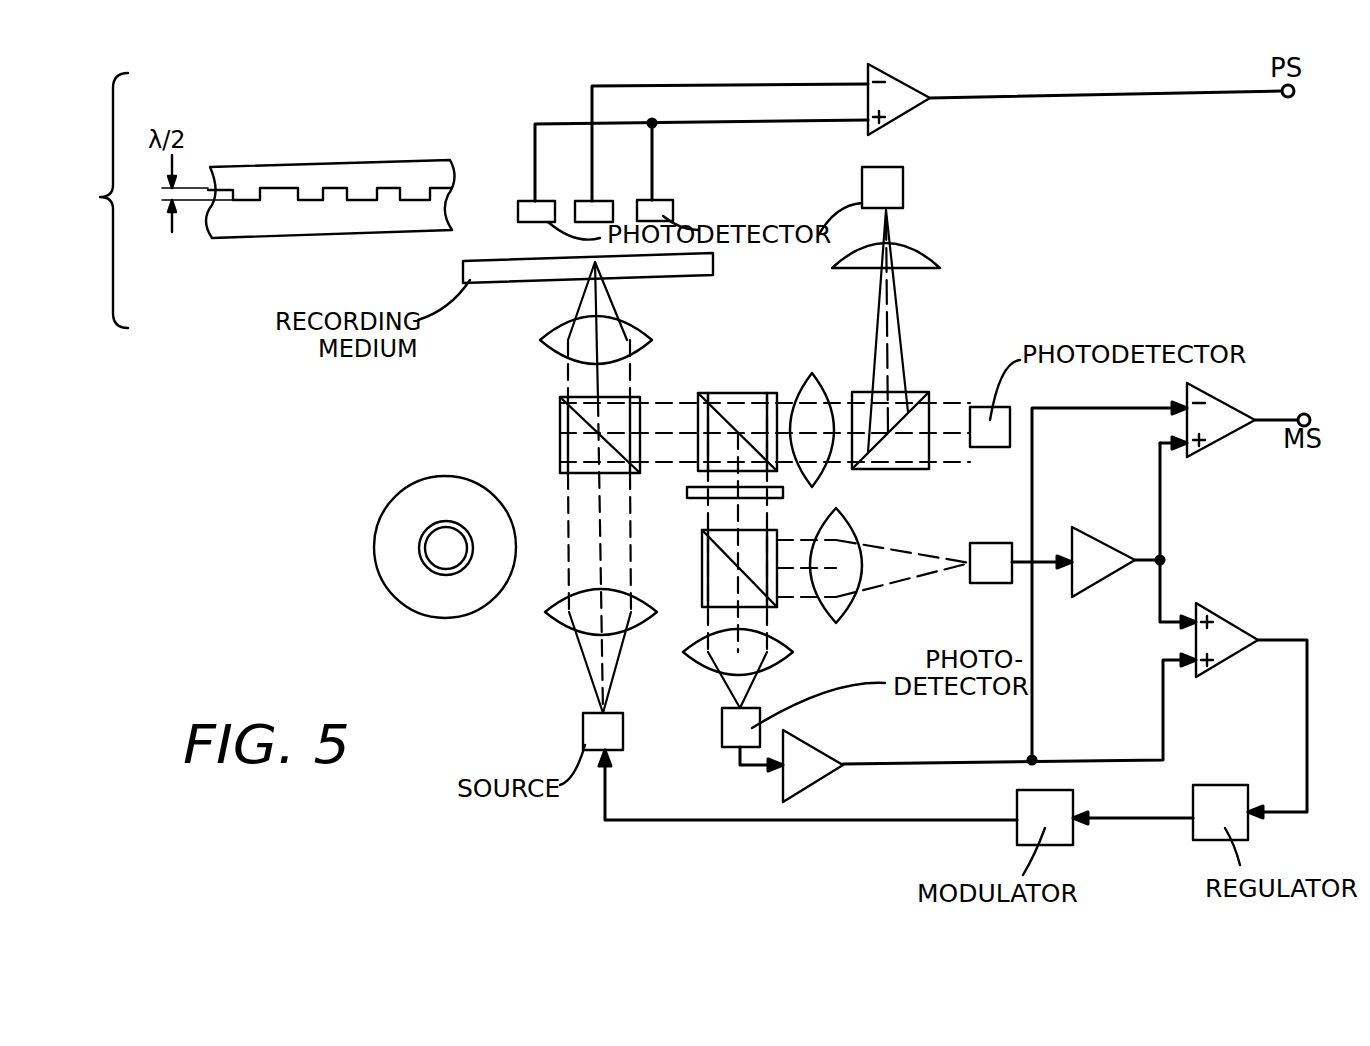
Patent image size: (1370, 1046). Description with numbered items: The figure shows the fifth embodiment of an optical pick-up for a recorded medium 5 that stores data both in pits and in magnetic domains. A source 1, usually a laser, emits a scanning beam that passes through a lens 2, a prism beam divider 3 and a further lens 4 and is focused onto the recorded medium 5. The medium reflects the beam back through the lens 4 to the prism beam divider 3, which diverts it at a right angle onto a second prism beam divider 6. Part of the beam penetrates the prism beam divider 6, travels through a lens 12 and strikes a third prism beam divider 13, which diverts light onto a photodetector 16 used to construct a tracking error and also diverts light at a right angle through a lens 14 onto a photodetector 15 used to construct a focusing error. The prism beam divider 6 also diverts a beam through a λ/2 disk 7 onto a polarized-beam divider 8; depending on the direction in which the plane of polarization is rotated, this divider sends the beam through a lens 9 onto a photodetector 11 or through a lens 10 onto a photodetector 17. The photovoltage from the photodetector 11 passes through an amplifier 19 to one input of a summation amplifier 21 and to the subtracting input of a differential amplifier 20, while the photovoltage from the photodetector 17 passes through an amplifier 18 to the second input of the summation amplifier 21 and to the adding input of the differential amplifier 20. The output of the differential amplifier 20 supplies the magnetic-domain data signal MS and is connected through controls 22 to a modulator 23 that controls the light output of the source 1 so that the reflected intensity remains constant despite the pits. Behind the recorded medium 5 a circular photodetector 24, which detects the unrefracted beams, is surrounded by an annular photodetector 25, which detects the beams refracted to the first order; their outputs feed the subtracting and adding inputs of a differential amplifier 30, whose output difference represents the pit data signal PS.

The source 1 is at (583, 735).
The lens 2 is at (553, 612).
The prism beam divider 3 is at (560, 433).
The lens 4 is at (545, 341).
The recorded medium 5 is at (372, 236).
The prism beam divider 6 is at (743, 393).
The λ/2 disk 7 is at (687, 492).
The polarized-beam divider 8 is at (702, 558).
The lens 9 is at (690, 655).
The lens 10 is at (845, 617).
The photodetector 11 is at (722, 728).
The lens 12 is at (810, 376).
The prism beam divider 13 is at (882, 470).
The lens 14 is at (936, 253).
The photodetector 15 is at (903, 196).
The photodetector 16 is at (980, 406).
The photodetector 17 is at (988, 543).
The amplifier 18 is at (1102, 540).
The amplifier 19 is at (812, 750).
The differential amplifier 20 is at (1222, 445).
The summation amplifier 21 is at (1222, 618).
The controls 22 is at (1193, 830).
The modulator 23 is at (1017, 833).
The photodetector 24 is at (600, 212).
The photodetector 25 is at (524, 210).
The differential amplifier 30 is at (912, 90).